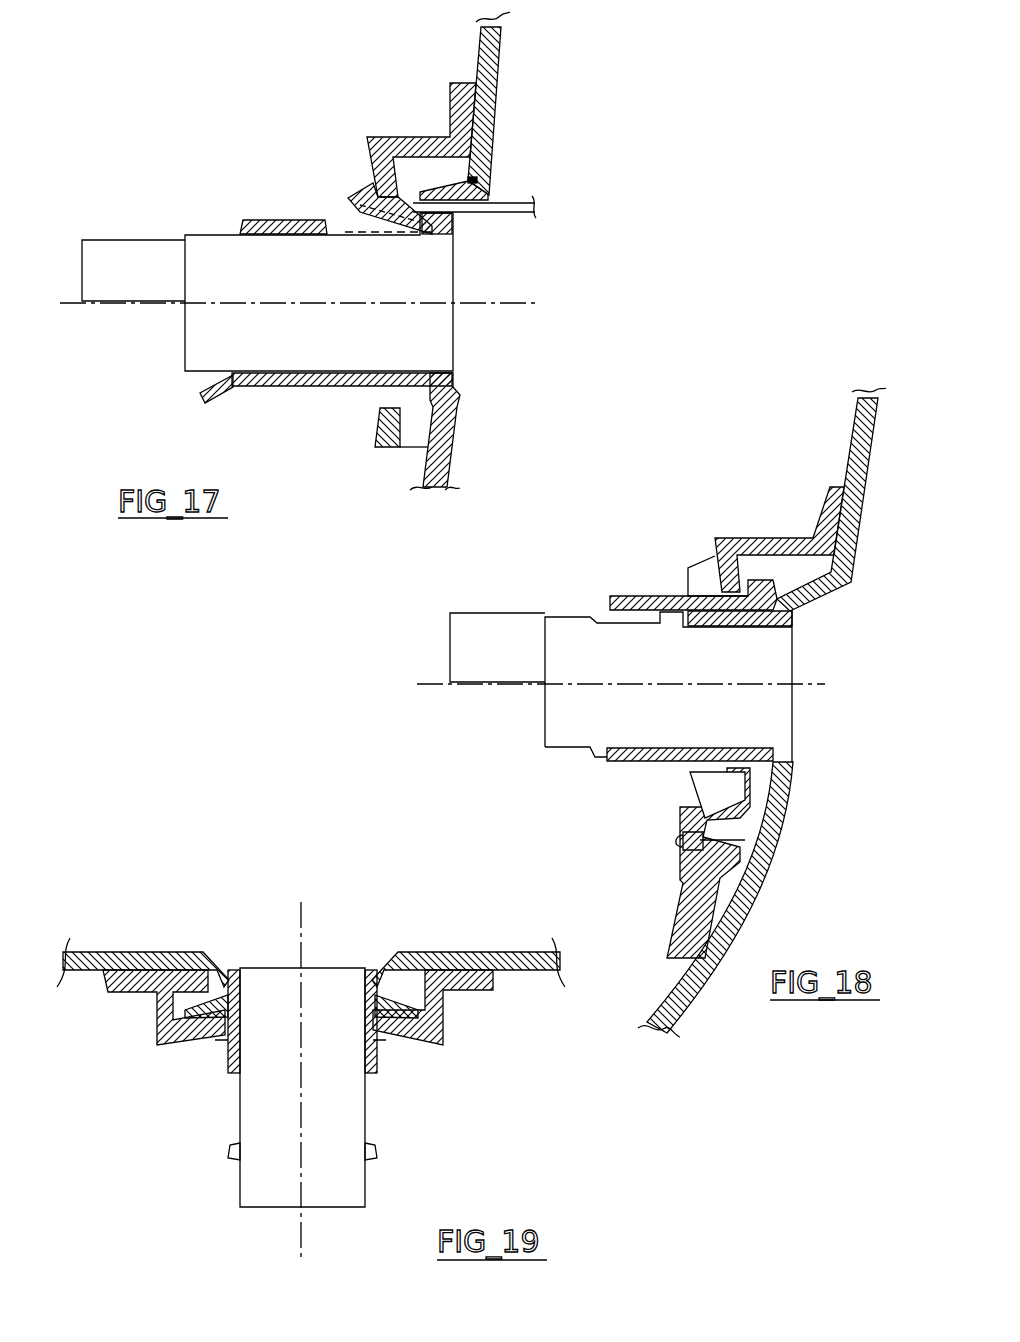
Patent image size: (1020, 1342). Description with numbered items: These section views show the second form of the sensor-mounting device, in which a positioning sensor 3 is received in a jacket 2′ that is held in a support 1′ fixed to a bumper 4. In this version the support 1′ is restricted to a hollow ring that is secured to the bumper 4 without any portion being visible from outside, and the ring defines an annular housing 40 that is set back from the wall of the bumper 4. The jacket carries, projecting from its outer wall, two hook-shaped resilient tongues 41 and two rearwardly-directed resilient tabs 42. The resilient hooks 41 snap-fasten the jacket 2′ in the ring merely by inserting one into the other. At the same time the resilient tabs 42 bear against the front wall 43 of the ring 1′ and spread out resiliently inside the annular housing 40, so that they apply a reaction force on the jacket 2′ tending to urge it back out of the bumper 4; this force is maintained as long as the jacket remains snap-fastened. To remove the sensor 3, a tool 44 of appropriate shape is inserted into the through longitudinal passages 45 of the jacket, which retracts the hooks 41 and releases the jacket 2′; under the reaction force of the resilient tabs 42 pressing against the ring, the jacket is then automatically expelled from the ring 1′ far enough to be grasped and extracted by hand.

In FIG. 17, the support 1′ is at (410, 137).
In FIG. 18, the support 1′ is at (767, 540).
In FIG. 19, the support 1′ is at (163, 1013).
In FIG. 17, the jacket 2′ is at (316, 380).
In FIG. 18, the jacket 2′ is at (652, 752).
In FIG. 19, the jacket 2′ is at (227, 1050).
In FIG. 17, the positioning sensor 3 is at (212, 333).
In FIG. 18, the positioning sensor 3 is at (555, 710).
In FIG. 19, the positioning sensor 3 is at (340, 1115).
In FIG. 17, the bumper 4 is at (499, 86).
In FIG. 18, the bumper 4 is at (845, 490).
In FIG. 19, the bumper 4 is at (150, 952).
In FIG. 19, the annular housing 40 is at (437, 1008).
In FIG. 17, the hook-shaped resilient tongues 41 is at (355, 220).
In FIG. 19, the rearwardly-directed resilient tabs 42 is at (202, 1040).
In FIG. 19, the front wall 43 is at (453, 1040).
In FIG. 17, the tool 44 is at (470, 207).
In FIG. 17, the through longitudinal passages 45 is at (500, 190).